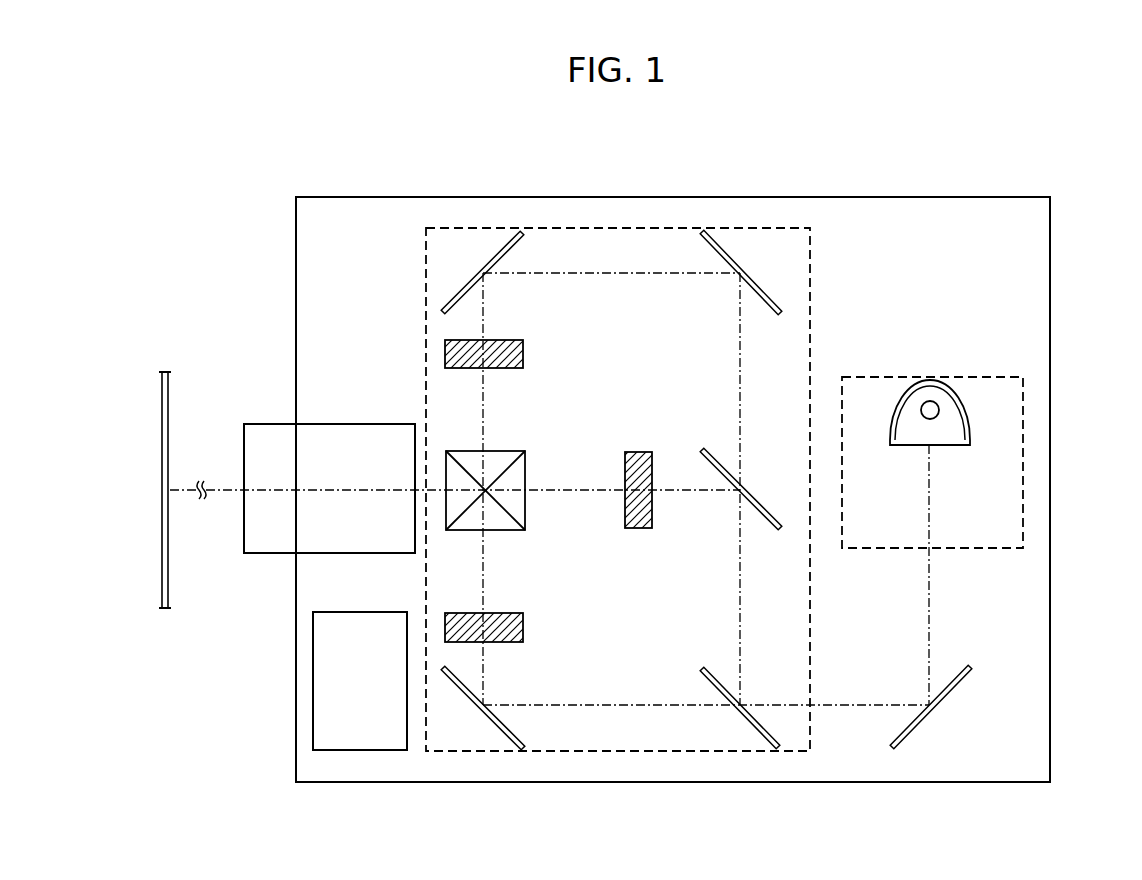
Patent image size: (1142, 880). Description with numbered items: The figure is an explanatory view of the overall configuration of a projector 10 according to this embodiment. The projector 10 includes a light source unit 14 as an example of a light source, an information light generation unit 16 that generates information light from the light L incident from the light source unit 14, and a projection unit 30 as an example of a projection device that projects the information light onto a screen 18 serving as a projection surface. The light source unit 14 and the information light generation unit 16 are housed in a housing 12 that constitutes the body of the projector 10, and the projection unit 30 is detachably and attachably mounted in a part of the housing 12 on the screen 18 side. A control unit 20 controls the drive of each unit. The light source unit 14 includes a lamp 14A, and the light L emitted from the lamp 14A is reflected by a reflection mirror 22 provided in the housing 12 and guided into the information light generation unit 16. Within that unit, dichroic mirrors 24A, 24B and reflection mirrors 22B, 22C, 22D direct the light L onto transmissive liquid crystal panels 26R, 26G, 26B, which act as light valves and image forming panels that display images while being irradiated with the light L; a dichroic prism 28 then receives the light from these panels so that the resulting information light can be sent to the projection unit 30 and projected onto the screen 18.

The projector 10 is at (1094, 224).
The housing 12 is at (1050, 320).
The light source unit 14 is at (1028, 454).
The lamp 14A is at (940, 406).
The information light generation unit 16 is at (765, 223).
The screen 18 is at (168, 392).
The control unit 20 is at (357, 752).
The mirror 22 is at (958, 690).
The reflection mirror 22B is at (780, 300).
The reflection mirror 22C is at (451, 306).
The reflection mirror 22D is at (520, 745).
The dichroic mirror 24A is at (701, 679).
The dichroic mirror 24B is at (702, 459).
The transmissive liquid crystal panel 26B is at (524, 350).
The transmissive liquid crystal panel 26G is at (636, 530).
The transmissive liquid crystal panel 26R is at (524, 627).
The dichroic prism 28 is at (529, 470).
The projection unit 30 is at (272, 422).
The light L is at (929, 590).